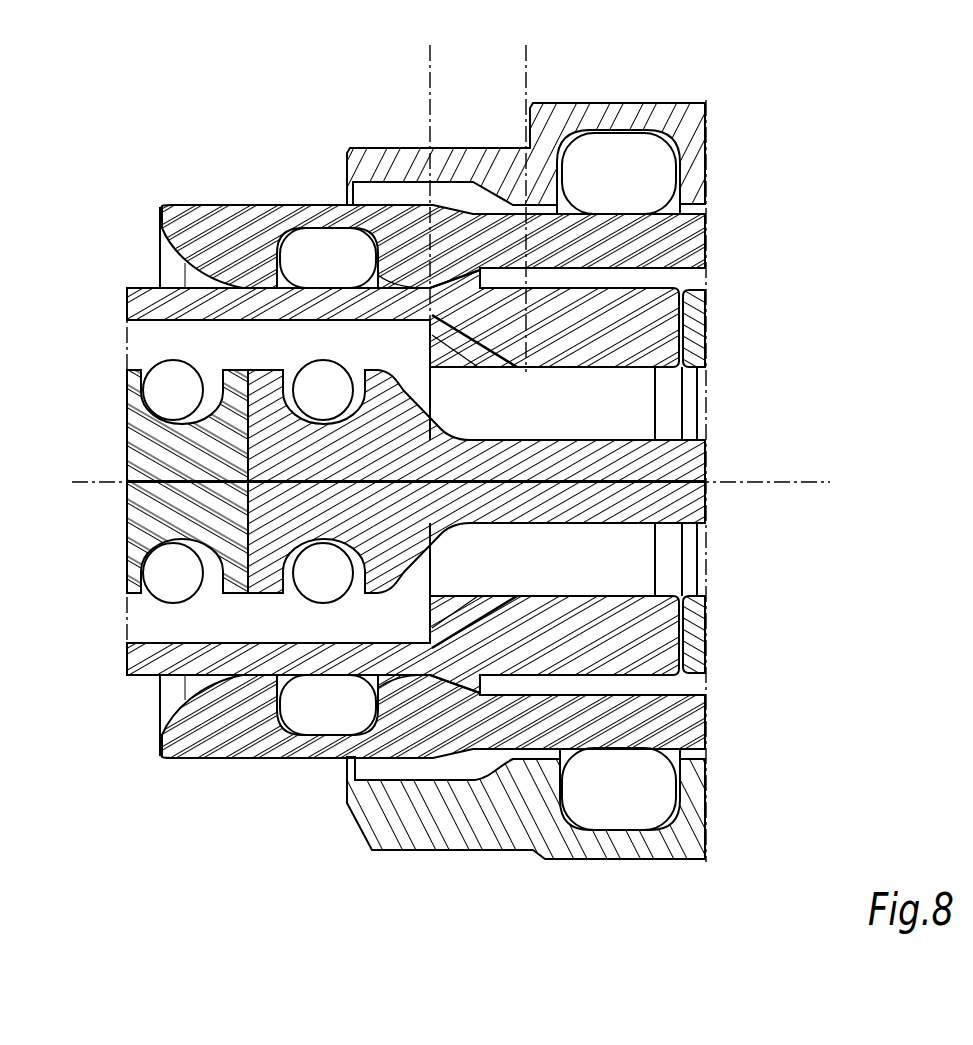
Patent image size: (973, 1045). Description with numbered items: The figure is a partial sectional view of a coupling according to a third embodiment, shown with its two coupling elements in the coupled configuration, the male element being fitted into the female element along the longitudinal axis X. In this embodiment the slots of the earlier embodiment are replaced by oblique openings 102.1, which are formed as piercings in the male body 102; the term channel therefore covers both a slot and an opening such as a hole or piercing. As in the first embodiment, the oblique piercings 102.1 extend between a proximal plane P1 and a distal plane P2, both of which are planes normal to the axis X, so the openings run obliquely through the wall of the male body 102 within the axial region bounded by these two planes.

The male body 102 is at (587, 643).
The oblique openings 102.1 is at (473, 348).
The longitudinal axis X is at (454, 483).
The proximal plane P1 is at (417, 204).
The distal plane P2 is at (513, 204).